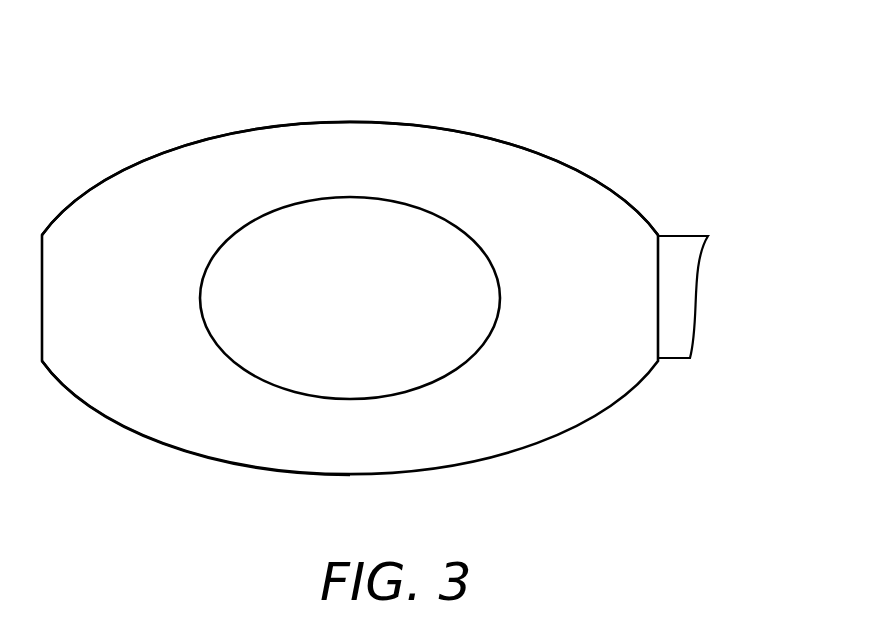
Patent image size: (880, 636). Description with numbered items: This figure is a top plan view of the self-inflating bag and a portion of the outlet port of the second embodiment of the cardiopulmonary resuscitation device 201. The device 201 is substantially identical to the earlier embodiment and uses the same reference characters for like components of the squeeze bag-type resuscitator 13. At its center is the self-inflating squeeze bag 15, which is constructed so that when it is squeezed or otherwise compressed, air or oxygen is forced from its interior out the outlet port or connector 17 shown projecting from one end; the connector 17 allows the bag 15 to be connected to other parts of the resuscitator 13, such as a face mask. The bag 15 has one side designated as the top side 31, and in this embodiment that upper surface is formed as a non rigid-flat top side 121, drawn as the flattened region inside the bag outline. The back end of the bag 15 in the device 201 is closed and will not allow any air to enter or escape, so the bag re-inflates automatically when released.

The cardiopulmonary resuscitation device 201 is at (628, 125).
The squeeze bag-type resuscitator 13 is at (153, 154).
The top side 31 is at (521, 171).
The self-inflating squeeze bag 15 is at (168, 413).
The non rigid-flat top side 121 is at (472, 360).
The outlet port or connector 17 is at (680, 248).